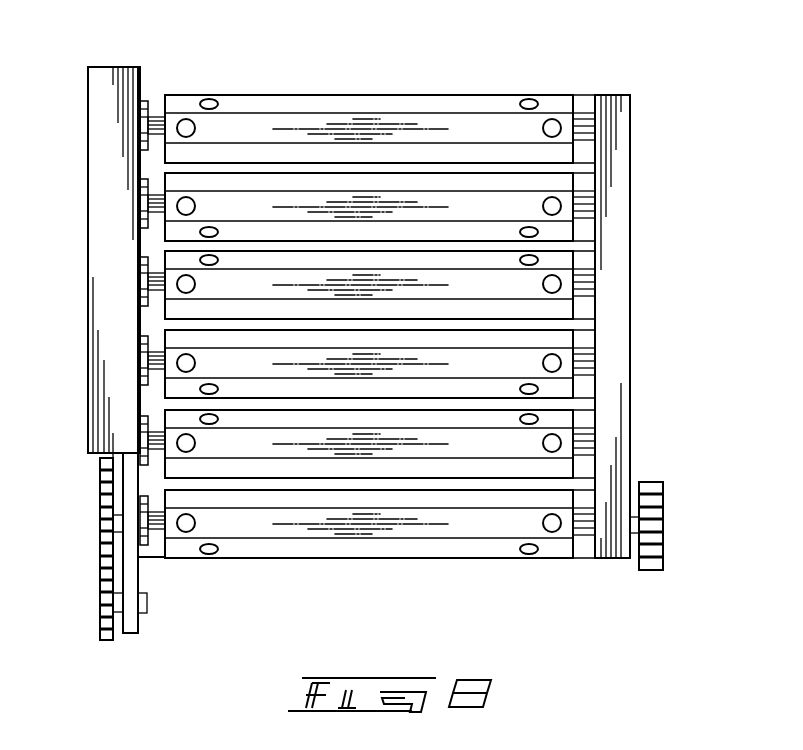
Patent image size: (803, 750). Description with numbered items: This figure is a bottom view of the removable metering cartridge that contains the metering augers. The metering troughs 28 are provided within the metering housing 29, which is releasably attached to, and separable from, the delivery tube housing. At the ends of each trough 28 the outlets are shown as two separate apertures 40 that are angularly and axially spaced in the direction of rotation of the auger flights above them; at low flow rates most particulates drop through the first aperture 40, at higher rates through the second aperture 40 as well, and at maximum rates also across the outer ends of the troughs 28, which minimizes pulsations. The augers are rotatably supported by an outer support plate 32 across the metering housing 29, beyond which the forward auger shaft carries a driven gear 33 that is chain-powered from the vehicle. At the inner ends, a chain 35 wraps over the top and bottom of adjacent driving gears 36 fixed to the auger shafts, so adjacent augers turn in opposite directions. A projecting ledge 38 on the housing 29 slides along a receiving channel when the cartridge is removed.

The trough 28 is at (422, 180).
The metering housing 29 is at (592, 94).
The outer support plate 32 is at (620, 331).
The driven gear 33 is at (655, 498).
The chain 35 is at (102, 608).
The driving gear 36 is at (102, 530).
The projecting ledge 38 is at (104, 262).
The aperture 40 is at (195, 127).